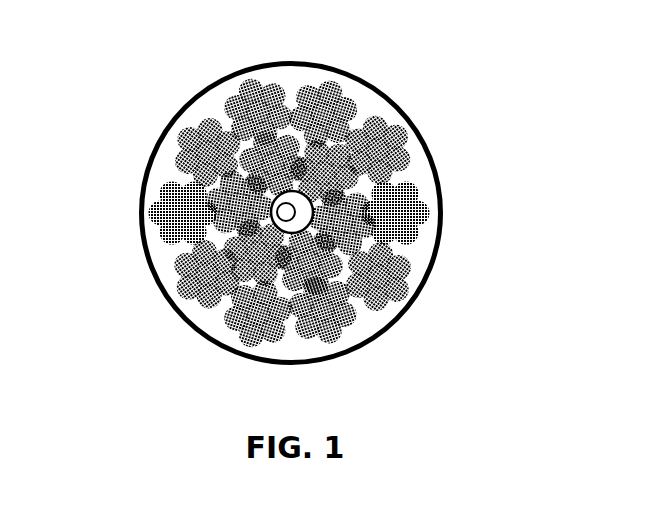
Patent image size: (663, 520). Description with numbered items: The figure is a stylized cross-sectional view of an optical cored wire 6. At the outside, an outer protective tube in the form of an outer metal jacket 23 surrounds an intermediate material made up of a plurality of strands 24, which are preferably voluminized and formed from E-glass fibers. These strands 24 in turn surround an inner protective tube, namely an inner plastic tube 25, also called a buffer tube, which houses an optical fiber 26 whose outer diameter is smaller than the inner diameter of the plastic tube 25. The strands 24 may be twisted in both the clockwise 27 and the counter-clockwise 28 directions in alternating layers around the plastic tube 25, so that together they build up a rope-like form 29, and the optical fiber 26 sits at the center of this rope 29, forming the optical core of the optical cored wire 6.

The optical cored wire 6 is at (287, 192).
The outer metal jacket 23 is at (413, 117).
The plurality of strands 24 is at (402, 183).
The inner plastic tube 25 is at (273, 208).
The optical fiber 26 is at (300, 214).
The clockwise direction 27 is at (265, 282).
The counter-clockwise direction 28 is at (236, 114).
The rope-like form 29 is at (340, 105).